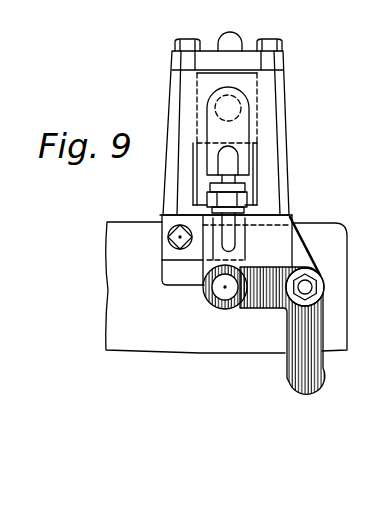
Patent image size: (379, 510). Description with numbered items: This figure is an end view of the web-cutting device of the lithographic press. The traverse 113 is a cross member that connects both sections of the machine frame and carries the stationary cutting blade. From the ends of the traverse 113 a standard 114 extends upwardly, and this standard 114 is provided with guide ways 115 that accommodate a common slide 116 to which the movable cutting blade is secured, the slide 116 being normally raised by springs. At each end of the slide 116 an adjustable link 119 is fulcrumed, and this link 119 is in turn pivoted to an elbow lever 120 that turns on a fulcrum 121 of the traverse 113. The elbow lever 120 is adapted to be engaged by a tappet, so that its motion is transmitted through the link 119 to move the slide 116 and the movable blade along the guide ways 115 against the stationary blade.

The traverse 113 is at (287, 222).
The standard 114 is at (267, 123).
The guide way 115 is at (200, 180).
The slide 116 is at (245, 83).
The adjustable link 119 is at (262, 183).
The elbow lever 120 is at (292, 321).
The fulcrum 121 is at (306, 286).